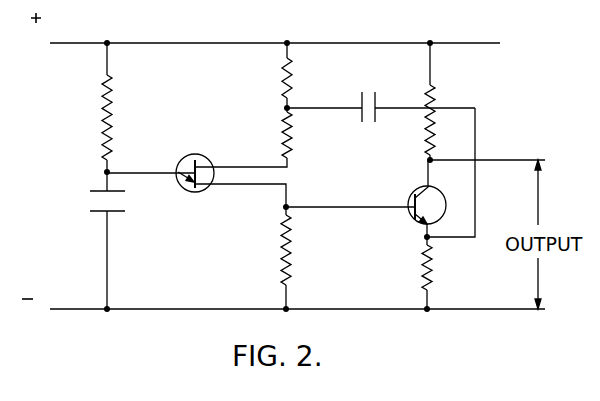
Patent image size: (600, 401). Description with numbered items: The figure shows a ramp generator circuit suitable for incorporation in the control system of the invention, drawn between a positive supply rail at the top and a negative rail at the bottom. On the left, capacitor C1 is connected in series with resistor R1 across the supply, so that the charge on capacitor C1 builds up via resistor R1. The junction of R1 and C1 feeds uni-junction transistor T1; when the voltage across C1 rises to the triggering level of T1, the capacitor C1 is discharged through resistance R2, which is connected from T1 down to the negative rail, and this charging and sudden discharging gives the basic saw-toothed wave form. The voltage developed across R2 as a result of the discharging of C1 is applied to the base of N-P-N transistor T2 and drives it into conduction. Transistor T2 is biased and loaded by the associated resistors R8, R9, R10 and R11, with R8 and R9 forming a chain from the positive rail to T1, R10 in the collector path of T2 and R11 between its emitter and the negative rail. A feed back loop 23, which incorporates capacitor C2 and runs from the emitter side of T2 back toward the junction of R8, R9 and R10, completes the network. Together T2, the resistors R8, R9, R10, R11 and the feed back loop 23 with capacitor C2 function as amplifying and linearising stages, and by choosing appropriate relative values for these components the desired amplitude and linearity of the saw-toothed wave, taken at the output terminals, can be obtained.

The resistor R1 is at (94, 107).
The capacitor C1 is at (88, 240).
The uni-junction transistor T1 is at (197, 168).
The resistor R8 is at (273, 75).
The resistor R9 is at (274, 133).
The resistance R2 is at (271, 258).
The capacitor C2 is at (381, 96).
The resistor R10 is at (413, 101).
The N-P-N transistor T2 is at (366, 198).
The resistor R11 is at (411, 273).
The feed back loop 23 is at (476, 190).